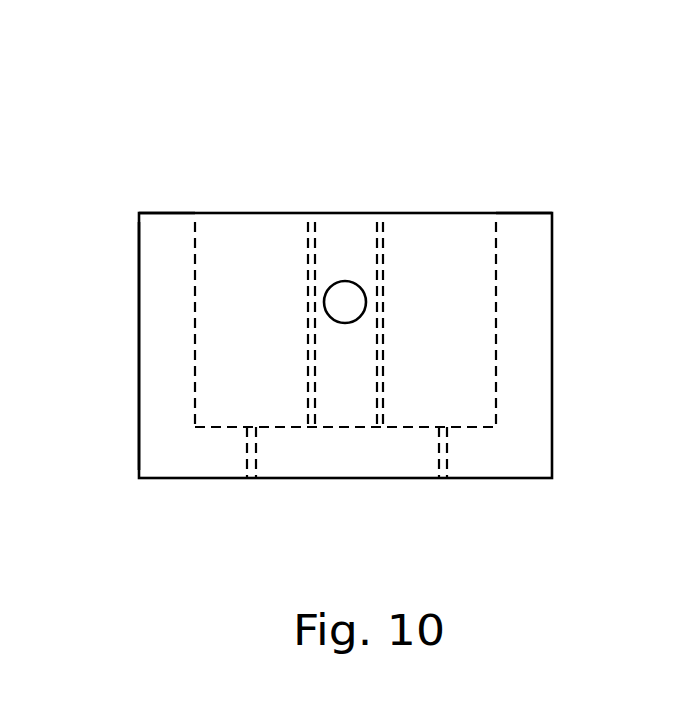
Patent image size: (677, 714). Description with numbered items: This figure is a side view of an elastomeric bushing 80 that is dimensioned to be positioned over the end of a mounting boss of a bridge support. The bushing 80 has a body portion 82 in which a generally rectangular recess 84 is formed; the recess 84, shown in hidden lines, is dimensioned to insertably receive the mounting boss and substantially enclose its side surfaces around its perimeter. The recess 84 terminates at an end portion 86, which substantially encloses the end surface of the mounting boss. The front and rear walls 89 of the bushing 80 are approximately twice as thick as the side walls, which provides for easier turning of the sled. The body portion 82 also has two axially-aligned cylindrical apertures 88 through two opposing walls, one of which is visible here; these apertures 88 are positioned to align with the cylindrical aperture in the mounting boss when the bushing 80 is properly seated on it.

The elastomeric bushing 80 is at (552, 365).
The body portion 82 is at (139, 284).
The rectangular recess 84 is at (293, 196).
The end portion 86 is at (352, 458).
The cylindrical apertures 88 is at (345, 281).
The front and rear walls 89 is at (160, 250).